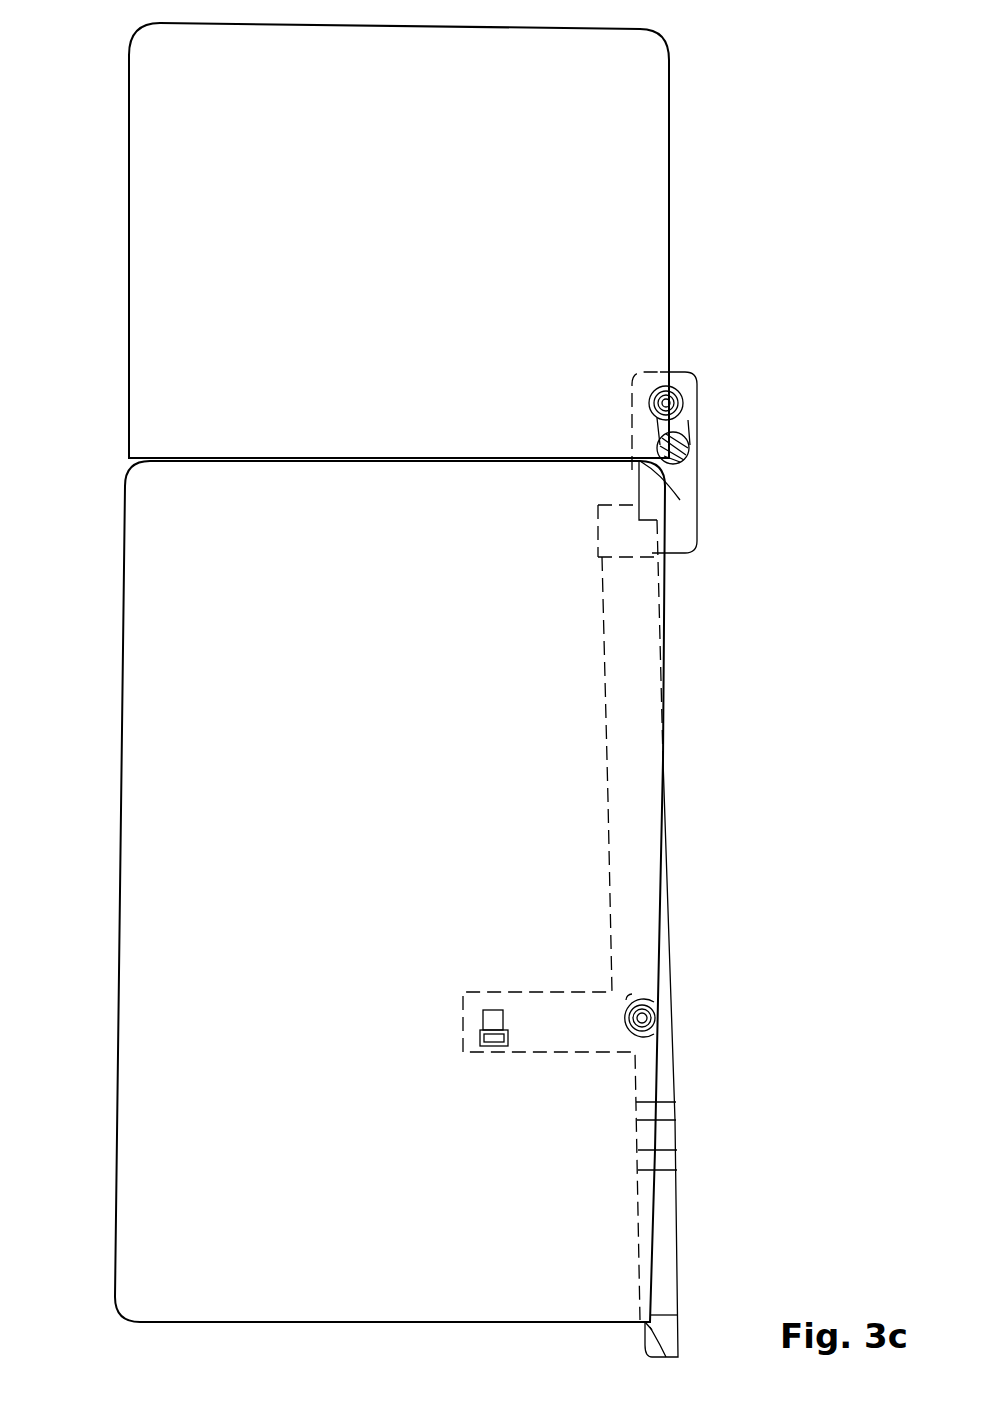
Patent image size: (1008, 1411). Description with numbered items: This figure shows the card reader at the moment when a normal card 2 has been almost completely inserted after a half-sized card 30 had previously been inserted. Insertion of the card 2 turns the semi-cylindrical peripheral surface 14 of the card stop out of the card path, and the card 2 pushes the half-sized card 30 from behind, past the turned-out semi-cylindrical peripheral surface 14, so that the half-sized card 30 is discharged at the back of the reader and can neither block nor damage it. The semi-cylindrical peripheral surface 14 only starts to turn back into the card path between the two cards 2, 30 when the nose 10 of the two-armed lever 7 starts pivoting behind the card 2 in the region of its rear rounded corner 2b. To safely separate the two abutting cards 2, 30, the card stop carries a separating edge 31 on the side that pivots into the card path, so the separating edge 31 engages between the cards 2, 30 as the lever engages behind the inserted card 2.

The half-sized card 30 is at (143, 251).
The card 2 is at (146, 690).
The rear rounded corner 2b is at (670, 1312).
The two-armed lever 7 is at (684, 992).
The nose 10 is at (646, 1323).
The semi-cylindrical peripheral surface 14 is at (683, 473).
The separating edge 31 is at (678, 478).